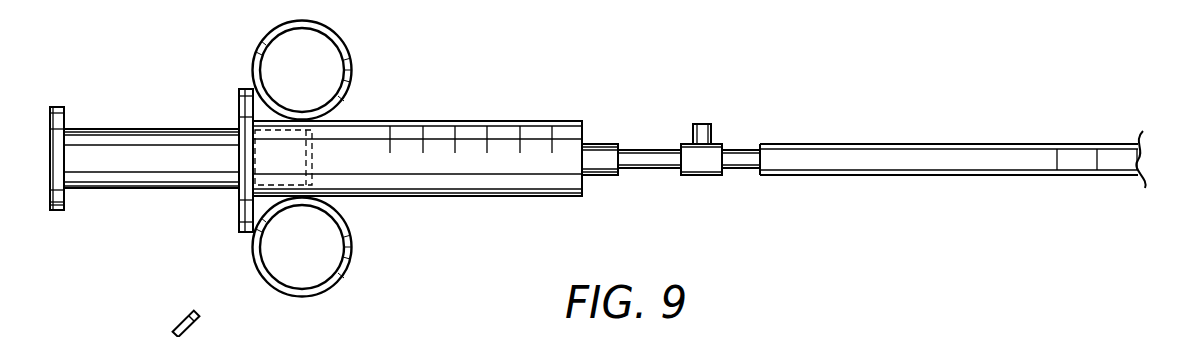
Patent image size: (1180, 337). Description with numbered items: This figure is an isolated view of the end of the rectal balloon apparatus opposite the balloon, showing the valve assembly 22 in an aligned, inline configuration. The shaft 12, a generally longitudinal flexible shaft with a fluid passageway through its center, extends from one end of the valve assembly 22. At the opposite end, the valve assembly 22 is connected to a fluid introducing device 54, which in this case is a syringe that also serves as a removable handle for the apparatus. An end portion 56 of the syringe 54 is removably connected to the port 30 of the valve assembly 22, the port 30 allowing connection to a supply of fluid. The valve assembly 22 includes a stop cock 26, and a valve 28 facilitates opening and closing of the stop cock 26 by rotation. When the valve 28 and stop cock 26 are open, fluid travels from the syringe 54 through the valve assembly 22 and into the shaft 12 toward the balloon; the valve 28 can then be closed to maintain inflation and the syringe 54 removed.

The shaft 12 is at (963, 144).
The valve assembly 22 is at (708, 124).
The stop cock 26 is at (707, 175).
The valve 28 is at (700, 124).
The port 30 is at (656, 169).
The fluid introducing device 54 is at (437, 121).
The end portion 56 is at (618, 146).